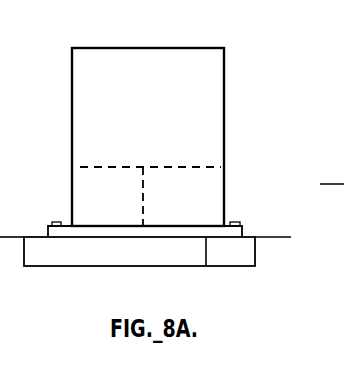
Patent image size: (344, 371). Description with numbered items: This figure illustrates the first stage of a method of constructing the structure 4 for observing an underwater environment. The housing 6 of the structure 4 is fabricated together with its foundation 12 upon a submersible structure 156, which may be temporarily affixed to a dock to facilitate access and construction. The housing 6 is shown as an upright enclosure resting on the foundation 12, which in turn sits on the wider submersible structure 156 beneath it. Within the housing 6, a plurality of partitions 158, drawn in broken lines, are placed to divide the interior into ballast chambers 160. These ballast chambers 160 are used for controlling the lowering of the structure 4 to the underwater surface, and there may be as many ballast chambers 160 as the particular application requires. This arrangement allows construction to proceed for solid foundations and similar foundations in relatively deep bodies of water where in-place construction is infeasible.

The structure 4 is at (101, 36).
The housing 6 is at (224, 88).
The foundation 12 is at (207, 267).
The submersible structure 156 is at (60, 263).
The partitions 158 is at (130, 166).
The ballast chambers 160 is at (123, 206).